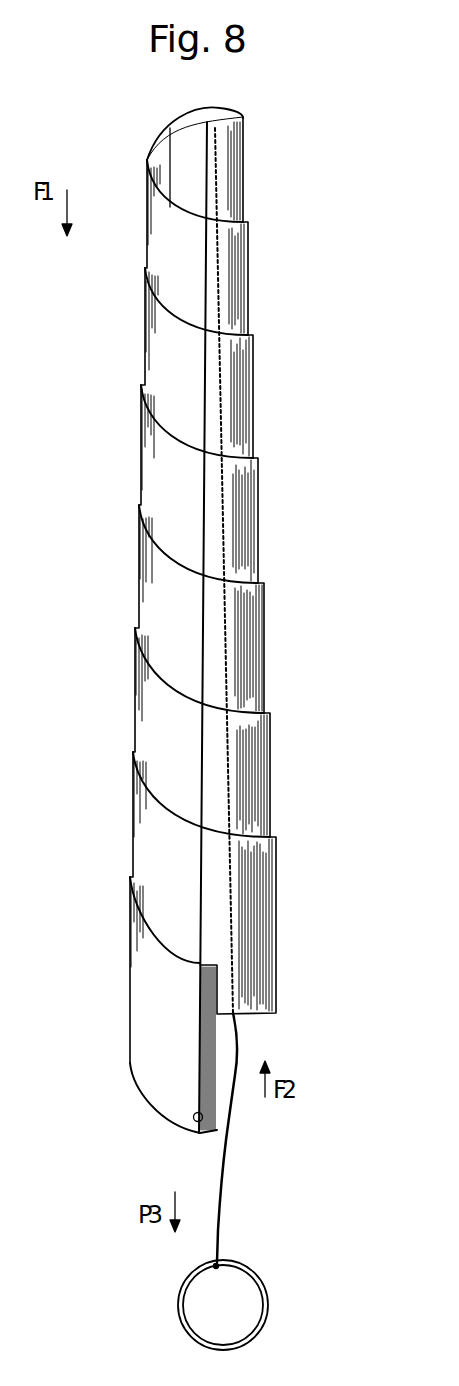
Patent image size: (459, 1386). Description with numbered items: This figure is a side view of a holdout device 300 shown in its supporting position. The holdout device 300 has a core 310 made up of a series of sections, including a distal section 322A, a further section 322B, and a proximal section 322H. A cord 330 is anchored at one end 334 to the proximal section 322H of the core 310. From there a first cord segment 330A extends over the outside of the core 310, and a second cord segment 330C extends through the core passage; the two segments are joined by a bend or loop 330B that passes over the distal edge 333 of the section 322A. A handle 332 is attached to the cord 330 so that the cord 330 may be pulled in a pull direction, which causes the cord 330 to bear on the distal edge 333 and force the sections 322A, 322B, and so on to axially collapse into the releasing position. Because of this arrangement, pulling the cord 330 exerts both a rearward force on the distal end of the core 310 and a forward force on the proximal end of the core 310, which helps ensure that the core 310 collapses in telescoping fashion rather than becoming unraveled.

The holdout device 300 is at (283, 148).
The core 310 is at (126, 612).
The section 322A is at (223, 173).
The section 322B is at (223, 270).
The proximal section 322H is at (157, 1013).
The cord 330 is at (225, 1178).
The first cord segment 330A is at (183, 728).
The bend or loop 330B is at (150, 213).
The second cord segment 330C is at (233, 412).
The handle 332 is at (268, 1302).
The distal edge 333 is at (187, 128).
The end 334 is at (195, 1123).